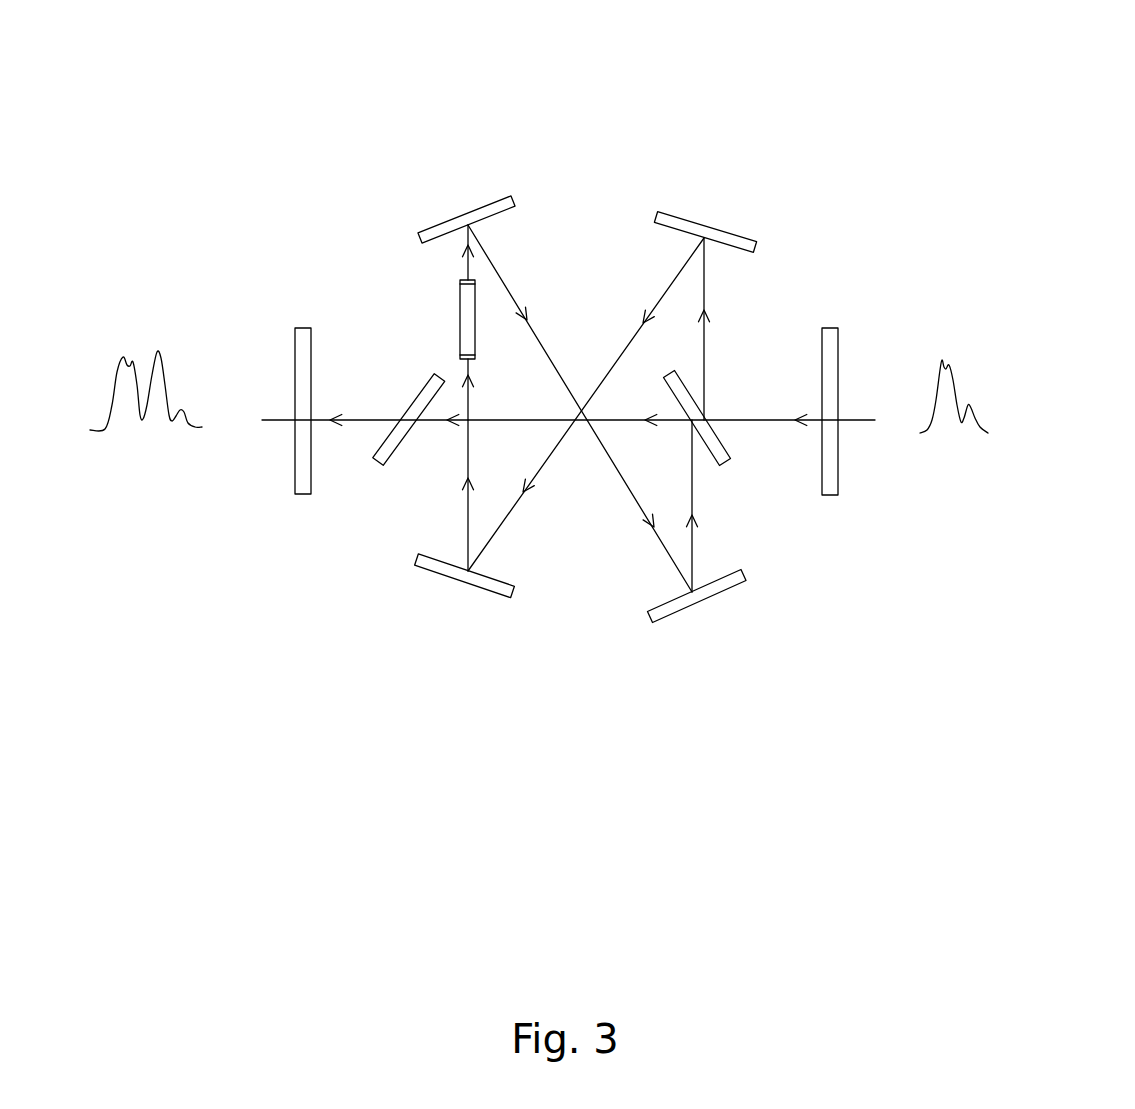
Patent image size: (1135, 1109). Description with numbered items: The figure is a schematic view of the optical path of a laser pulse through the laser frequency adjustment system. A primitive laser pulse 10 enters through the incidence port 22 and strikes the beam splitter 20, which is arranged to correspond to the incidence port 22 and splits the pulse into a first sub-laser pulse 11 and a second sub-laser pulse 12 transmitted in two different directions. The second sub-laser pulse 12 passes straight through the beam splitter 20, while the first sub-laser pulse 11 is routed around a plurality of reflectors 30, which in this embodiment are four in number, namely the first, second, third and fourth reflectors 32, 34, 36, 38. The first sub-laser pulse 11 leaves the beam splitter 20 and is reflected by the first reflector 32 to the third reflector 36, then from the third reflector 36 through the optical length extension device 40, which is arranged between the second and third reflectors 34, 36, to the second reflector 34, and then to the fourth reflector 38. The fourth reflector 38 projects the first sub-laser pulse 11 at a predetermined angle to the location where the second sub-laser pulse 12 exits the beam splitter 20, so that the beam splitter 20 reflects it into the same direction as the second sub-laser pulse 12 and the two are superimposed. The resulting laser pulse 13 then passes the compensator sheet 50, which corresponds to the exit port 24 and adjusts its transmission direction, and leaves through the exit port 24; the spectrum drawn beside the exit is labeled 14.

The primitive laser pulse 10 is at (938, 385).
The first sub-laser pulse 11 is at (704, 342).
The second sub-laser pulse 12 is at (672, 430).
The laser pulse 13 is at (433, 423).
The output light spectrum 14 is at (165, 385).
The beam splitter 20 is at (692, 395).
The incidence port 22 is at (830, 328).
The exit port 24 is at (302, 328).
The reflectors 30 is at (567, 95).
The first reflector 32 is at (682, 220).
The second reflector 34 is at (488, 203).
The third reflector 36 is at (492, 592).
The fourth reflector 38 is at (663, 617).
The optical length extension device 40 is at (460, 318).
The compensator sheet 50 is at (412, 392).